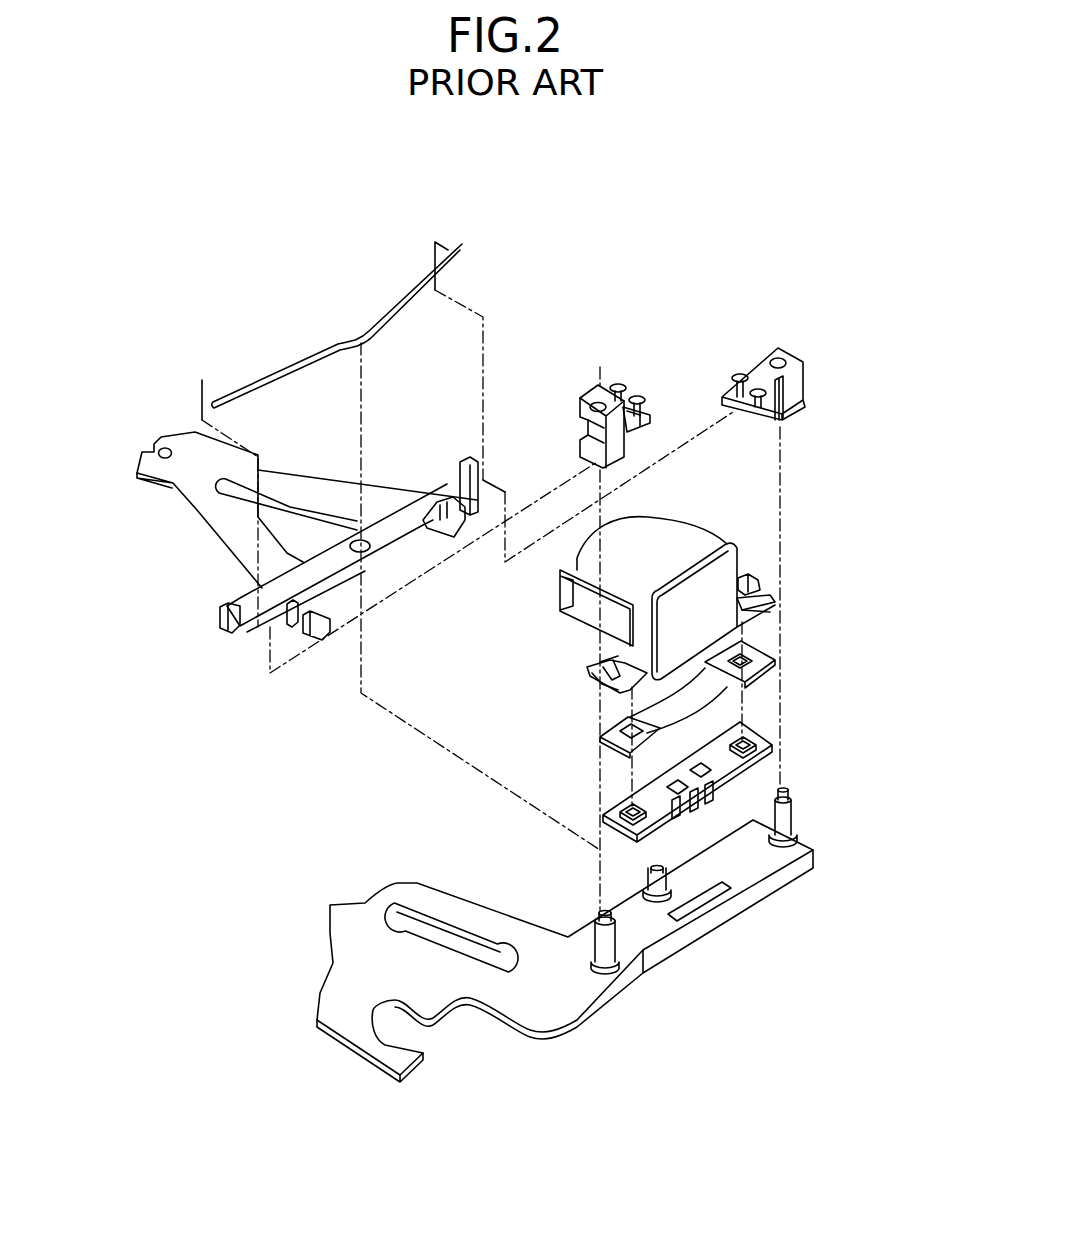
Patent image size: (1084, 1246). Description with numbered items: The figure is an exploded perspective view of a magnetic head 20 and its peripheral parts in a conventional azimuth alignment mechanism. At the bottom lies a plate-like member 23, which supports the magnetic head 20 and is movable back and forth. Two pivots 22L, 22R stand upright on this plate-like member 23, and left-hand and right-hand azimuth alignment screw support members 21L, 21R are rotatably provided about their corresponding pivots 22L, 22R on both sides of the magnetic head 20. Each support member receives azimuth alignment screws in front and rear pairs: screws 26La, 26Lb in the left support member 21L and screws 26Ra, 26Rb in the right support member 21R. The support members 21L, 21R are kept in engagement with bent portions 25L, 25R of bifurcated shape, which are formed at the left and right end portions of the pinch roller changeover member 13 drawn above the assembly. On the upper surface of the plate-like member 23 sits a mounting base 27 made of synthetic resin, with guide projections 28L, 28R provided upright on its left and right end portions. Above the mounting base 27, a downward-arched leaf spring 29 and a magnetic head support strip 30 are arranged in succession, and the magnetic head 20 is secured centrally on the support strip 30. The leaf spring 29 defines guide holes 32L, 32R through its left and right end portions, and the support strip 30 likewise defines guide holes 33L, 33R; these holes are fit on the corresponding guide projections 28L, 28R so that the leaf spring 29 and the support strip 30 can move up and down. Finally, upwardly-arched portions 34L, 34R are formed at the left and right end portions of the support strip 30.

The pinch roller changeover member 13 is at (175, 484).
The magnetic head 20 is at (677, 537).
The left azimuth alignment screw support member 21L is at (582, 406).
The right azimuth alignment screw support member 21R is at (790, 360).
The left pivot 22L is at (617, 943).
The right pivot 22R is at (790, 817).
The plate-like member 23 is at (580, 1020).
The left bent portion 25L is at (300, 633).
The right bent portion 25R is at (462, 510).
The azimuth alignment screw 26La is at (618, 385).
The azimuth alignment screw 26Lb is at (637, 396).
The azimuth alignment screw 26Ra is at (740, 377).
The azimuth alignment screw 26Rb is at (783, 392).
The mounting base 27 is at (727, 785).
The left guide projection 28L is at (603, 800).
The right guide projection 28R is at (753, 737).
The leaf spring 29 is at (700, 718).
The magnetic head support strip 30 is at (760, 613).
The left guide hole 32L is at (603, 727).
The right guide hole 32R is at (750, 657).
The left guide hole 33L is at (620, 653).
The right guide hole 33R is at (767, 597).
The left upwardly-arched portion 34L is at (620, 662).
The right upwardly-arched portion 34R is at (757, 578).